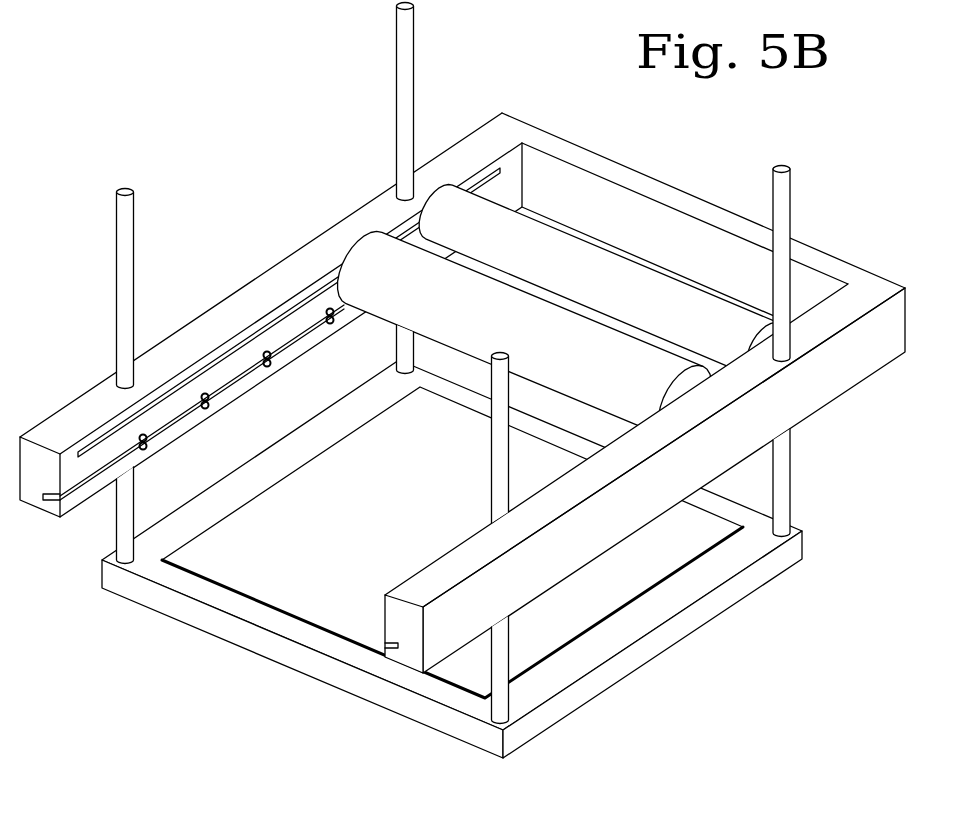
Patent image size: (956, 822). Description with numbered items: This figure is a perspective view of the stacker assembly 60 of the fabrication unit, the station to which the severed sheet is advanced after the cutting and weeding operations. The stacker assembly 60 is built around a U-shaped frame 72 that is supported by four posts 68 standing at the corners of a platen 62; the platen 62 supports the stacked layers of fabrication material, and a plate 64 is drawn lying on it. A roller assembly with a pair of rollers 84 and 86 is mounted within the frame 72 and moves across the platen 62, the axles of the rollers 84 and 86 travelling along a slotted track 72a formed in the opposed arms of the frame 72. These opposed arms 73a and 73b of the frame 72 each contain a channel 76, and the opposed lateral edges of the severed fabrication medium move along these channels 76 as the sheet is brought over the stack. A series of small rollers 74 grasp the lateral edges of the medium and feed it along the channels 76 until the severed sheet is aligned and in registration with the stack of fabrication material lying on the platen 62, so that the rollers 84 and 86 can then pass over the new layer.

The stacker assembly 60 is at (189, 147).
The platen 62 is at (785, 578).
The plate 64 is at (695, 566).
The posts 68 is at (798, 188).
The U-shaped frame 72 is at (610, 153).
The slotted track 72a is at (323, 287).
The arm 73a is at (217, 303).
The arm 73b is at (805, 422).
The small rollers 74 is at (336, 326).
The channels 76 is at (290, 348).
The roller 84 is at (375, 233).
The roller 86 is at (548, 230).